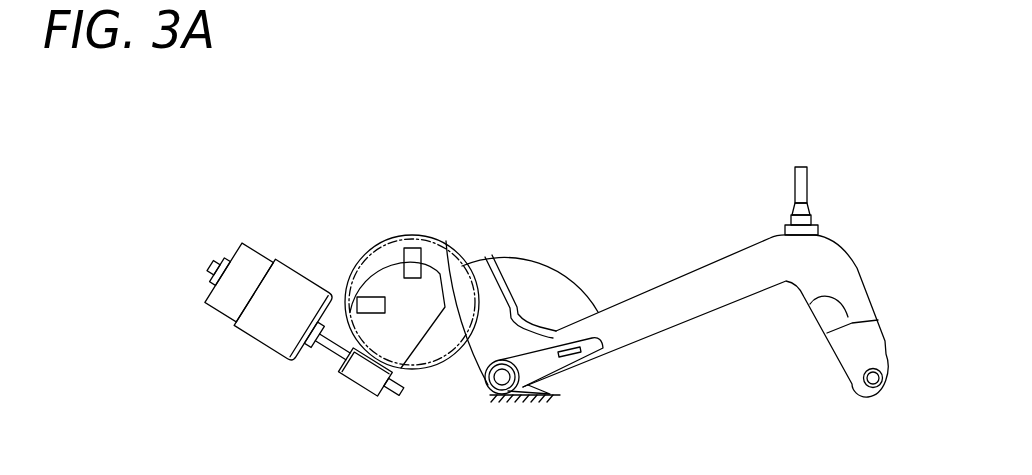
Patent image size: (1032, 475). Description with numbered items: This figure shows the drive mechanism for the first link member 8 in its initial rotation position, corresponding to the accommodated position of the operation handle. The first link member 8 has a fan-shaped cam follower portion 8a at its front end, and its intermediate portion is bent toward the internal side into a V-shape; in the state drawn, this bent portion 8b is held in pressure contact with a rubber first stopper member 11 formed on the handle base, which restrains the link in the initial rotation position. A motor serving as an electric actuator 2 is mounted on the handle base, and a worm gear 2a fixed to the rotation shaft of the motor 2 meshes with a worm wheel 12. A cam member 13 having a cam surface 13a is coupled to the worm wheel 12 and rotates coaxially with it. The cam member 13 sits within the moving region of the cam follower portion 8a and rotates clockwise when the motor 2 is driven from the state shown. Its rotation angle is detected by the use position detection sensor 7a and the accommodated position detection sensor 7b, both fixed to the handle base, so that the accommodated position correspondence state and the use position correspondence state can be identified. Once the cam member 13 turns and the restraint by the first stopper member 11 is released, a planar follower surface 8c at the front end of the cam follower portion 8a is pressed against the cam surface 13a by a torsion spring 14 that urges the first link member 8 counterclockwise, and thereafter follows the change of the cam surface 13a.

The electric actuator 2 is at (260, 327).
The worm gear 2a is at (368, 377).
The use position detection sensor 7a is at (420, 252).
The accommodated position detection sensor 7b is at (352, 341).
The first link member 8 is at (650, 349).
The cam follower portion 8a is at (488, 291).
The bent portion 8b is at (810, 251).
The follower surface 8c is at (453, 323).
The first stopper member 11 is at (794, 176).
The worm wheel 12 is at (430, 363).
The cam member 13 is at (380, 296).
The cam surface 13a is at (388, 262).
The torsion spring 14 is at (548, 363).